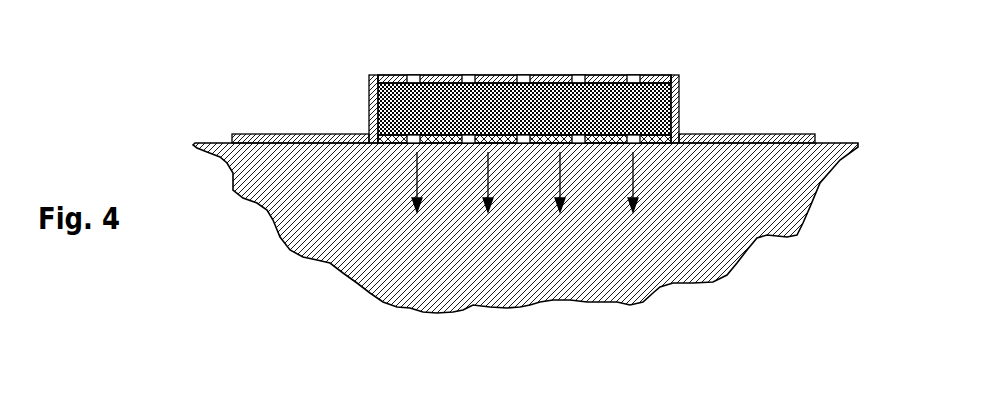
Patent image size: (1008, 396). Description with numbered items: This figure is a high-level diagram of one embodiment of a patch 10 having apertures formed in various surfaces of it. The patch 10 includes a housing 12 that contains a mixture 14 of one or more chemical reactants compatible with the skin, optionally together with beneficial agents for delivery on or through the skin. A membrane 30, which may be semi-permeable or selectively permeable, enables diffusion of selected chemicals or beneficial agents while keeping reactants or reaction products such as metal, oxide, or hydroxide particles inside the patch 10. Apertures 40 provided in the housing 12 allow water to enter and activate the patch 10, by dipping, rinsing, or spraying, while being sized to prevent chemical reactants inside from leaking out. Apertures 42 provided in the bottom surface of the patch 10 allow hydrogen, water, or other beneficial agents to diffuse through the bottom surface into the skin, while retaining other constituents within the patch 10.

The patch 10 is at (523, 104).
The housing 12 is at (657, 76).
The mixture 14 is at (660, 110).
The membrane 30 is at (390, 135).
The apertures 40 is at (633, 76).
The apertures 42 is at (632, 143).